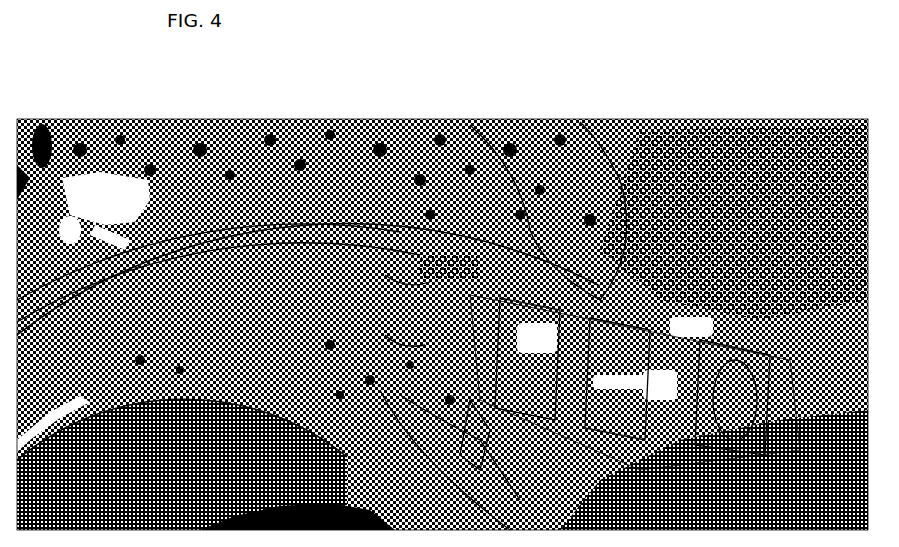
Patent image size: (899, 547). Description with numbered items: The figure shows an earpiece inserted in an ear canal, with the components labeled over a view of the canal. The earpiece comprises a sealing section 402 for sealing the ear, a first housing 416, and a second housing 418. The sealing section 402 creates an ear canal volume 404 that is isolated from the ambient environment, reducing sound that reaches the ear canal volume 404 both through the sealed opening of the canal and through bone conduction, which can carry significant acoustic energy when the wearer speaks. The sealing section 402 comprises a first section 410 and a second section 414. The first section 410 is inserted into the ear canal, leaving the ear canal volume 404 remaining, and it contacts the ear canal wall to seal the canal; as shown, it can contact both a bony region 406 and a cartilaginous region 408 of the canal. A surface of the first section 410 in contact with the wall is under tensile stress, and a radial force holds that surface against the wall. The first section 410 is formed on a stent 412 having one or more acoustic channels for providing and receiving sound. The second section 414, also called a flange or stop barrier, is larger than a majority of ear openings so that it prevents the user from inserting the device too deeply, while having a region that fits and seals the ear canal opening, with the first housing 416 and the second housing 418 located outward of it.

The sealing section 402 is at (478, 252).
The ear canal volume 404 is at (276, 290).
The bony region 406 is at (277, 212).
The cartilaginous region 408 is at (548, 262).
The first section 410 is at (398, 343).
The stent 412 is at (402, 283).
The second section 414 is at (542, 333).
The first housing 416 is at (617, 350).
The second housing 418 is at (708, 363).